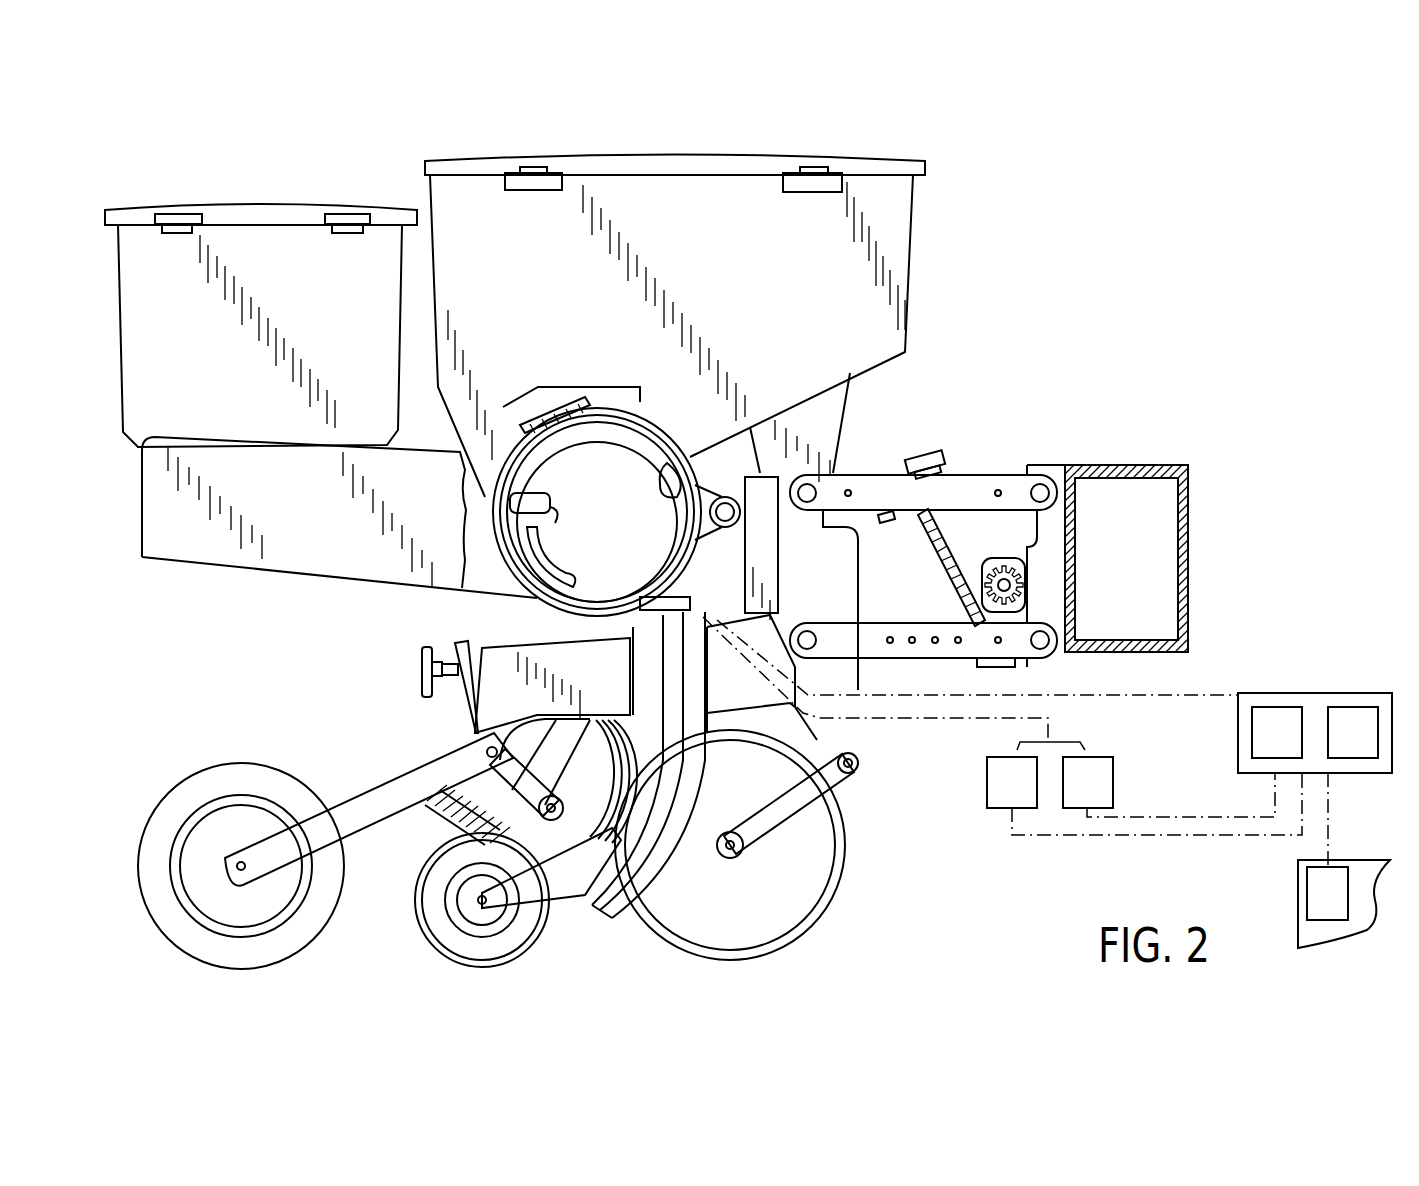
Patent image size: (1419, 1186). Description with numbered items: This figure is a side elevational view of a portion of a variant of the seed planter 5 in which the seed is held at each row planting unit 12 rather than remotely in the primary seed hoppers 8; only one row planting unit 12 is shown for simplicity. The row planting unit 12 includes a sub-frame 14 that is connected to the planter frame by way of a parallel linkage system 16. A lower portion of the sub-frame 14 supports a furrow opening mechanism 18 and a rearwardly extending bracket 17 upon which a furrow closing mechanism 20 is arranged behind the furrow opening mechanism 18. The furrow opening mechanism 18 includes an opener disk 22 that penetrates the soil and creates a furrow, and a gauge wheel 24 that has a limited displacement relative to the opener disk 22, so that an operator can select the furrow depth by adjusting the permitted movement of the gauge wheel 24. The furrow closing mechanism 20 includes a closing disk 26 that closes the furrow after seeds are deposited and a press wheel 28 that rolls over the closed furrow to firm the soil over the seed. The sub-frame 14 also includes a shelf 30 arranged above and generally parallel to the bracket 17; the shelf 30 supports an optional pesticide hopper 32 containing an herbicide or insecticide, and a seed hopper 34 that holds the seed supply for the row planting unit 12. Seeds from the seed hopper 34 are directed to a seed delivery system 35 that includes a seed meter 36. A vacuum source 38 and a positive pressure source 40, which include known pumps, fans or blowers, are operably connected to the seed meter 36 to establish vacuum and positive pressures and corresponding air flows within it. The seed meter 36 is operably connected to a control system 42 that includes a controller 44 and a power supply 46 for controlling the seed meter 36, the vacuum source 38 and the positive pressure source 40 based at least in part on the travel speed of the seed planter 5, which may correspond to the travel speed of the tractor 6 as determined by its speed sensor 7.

The seed planter 5 is at (1028, 253).
The tractor 6 is at (1363, 866).
The speed sensor 7 is at (1321, 905).
The primary seed hoppers 8 is at (1145, 463).
The row planting unit 12 is at (918, 328).
The sub-frame 14 is at (862, 571).
The parallel linkage system 16 is at (977, 468).
The rearwardly extending bracket 17 is at (497, 652).
The furrow opening mechanism 18 is at (870, 854).
The furrow closing mechanism 20 is at (355, 755).
The opener disk 22 is at (794, 947).
The gauge wheel 24 is at (805, 898).
The closing disk 26 is at (518, 942).
The press wheel 28 is at (172, 796).
The shelf 30 is at (168, 549).
The pesticide hopper 32 is at (330, 320).
The seed hopper 34 is at (749, 250).
The seed delivery system 35 is at (593, 390).
The seed meter 36 is at (649, 440).
The vacuum source 38 is at (999, 797).
The positive pressure source 40 is at (1075, 797).
The control system 42 is at (1313, 691).
The controller 44 is at (1264, 747).
The power supply 46 is at (1340, 747).